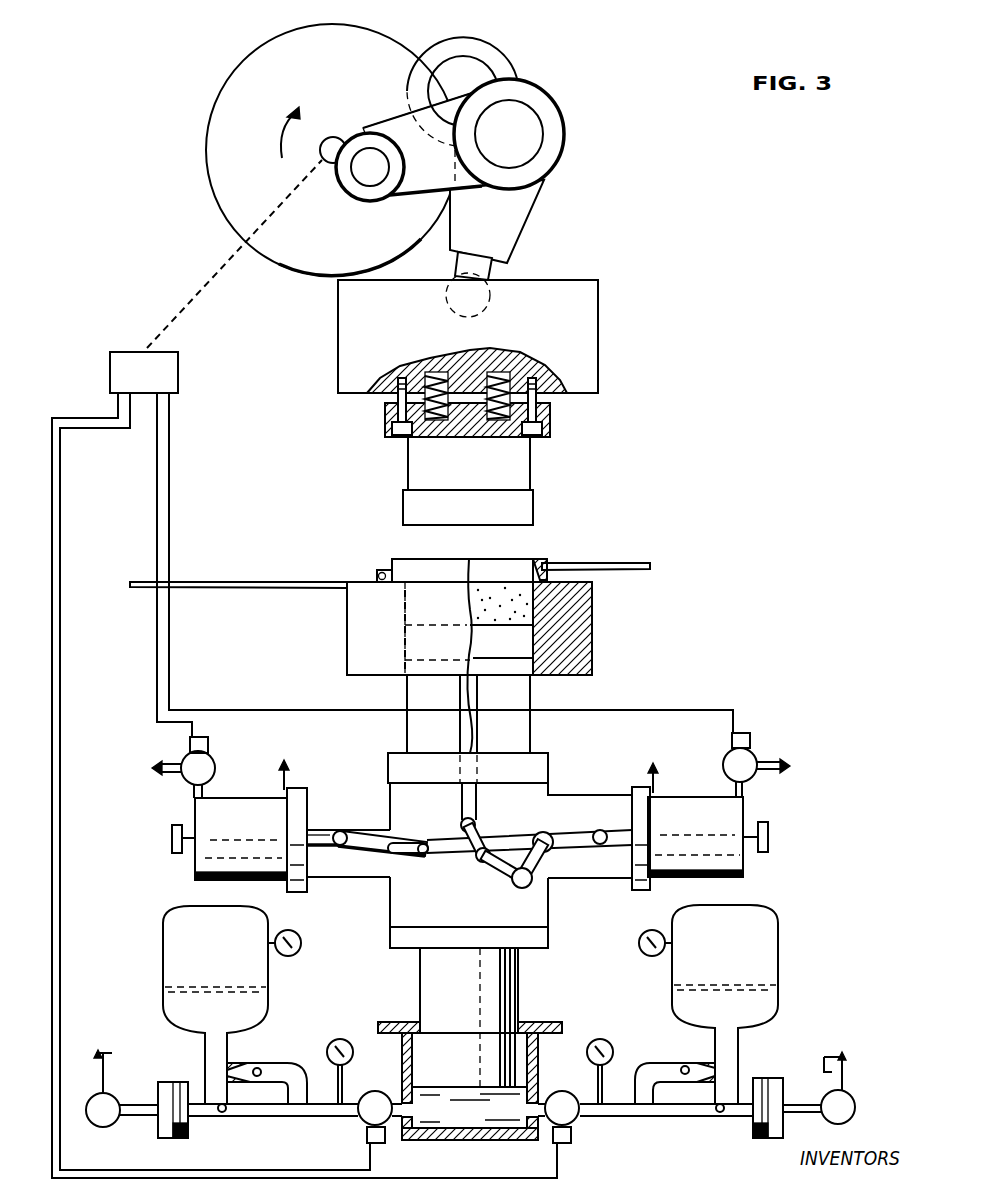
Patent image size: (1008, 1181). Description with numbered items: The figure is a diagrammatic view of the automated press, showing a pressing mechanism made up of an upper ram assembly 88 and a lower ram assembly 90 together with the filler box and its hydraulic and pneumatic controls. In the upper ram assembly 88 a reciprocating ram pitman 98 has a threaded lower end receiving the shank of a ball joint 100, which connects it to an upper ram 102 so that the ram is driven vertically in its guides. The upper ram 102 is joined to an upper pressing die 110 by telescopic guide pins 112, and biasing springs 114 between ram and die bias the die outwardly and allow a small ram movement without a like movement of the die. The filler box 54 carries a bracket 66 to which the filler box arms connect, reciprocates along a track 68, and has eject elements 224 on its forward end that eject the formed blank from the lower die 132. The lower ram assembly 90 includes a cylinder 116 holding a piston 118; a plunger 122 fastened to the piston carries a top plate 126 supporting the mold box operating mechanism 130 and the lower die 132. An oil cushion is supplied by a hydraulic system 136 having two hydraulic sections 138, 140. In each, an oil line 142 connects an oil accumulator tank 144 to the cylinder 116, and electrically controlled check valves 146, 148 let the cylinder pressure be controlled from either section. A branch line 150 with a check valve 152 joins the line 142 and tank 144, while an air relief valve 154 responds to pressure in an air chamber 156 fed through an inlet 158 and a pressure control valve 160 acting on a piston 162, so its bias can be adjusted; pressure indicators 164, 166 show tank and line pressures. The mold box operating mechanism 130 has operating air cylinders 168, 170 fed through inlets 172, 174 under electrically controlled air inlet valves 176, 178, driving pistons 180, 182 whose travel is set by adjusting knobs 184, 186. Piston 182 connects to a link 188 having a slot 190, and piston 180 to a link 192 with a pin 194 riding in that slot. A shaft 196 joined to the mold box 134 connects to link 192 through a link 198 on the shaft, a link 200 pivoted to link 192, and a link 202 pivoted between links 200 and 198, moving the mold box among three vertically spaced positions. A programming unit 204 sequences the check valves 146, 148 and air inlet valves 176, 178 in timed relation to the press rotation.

The filler box 54 is at (540, 566).
The bracket 66 is at (381, 570).
The track 68 is at (249, 581).
The upper ram assembly 88 is at (292, 400).
The lower ram assembly 90 is at (168, 888).
The ram pitman 98 is at (510, 218).
The ball joint 100 is at (456, 274).
The upper ram 102 is at (347, 331).
The upper pressing die 110 is at (481, 468).
The telescopic bolts or guide pins 112 is at (392, 413).
The biasing springs 114 is at (492, 372).
The cylinder 116 is at (403, 1056).
The piston 118 is at (465, 1079).
The plunger 122 is at (432, 975).
The top plate 126 is at (465, 937).
The mold box operating mechanism 130 is at (403, 903).
The lower die 132 is at (403, 638).
The mold box 134 is at (347, 614).
The hydraulic system 136 is at (312, 1135).
The hydraulic section 138 is at (628, 1120).
The hydraulic section 140 is at (265, 1118).
The oil line 142 is at (350, 1118).
The oil accumulator tank 144 is at (166, 951).
The electrically controlled check valve 146 is at (574, 1084).
The electrically controlled check valve 148 is at (385, 1084).
The branch line 150 is at (298, 1062).
The check valve 152 is at (257, 1066).
The air relief valve 154 is at (222, 1114).
The air chamber 156 is at (165, 1139).
The inlet 158 is at (108, 1070).
The pressure control valve 160 is at (118, 1125).
The piston 162 is at (180, 1139).
The pressure indicator 164 is at (297, 951).
The pressure indicator 166 is at (346, 1025).
The operating air cylinder 168 is at (708, 802).
The operating air cylinder 170 is at (261, 802).
The air inlet 172 is at (163, 762).
The air inlet 174 is at (790, 764).
The electrically controlled air inlet valve 176 is at (724, 763).
The electrically controlled air inlet valve 178 is at (211, 766).
The piston 180 is at (607, 832).
The piston 182 is at (320, 848).
The adjusting knob 184 is at (770, 832).
The adjusting knob 186 is at (172, 833).
The link 188 is at (340, 831).
The slot 190 is at (395, 838).
The link 192 is at (542, 832).
The laterally extending pin 194 is at (422, 843).
The shaft 196 is at (462, 800).
The link 198 is at (485, 834).
The link 200 is at (541, 862).
The link 202 is at (497, 877).
The programming unit 204 is at (180, 380).
The eject elements 224 is at (612, 563).